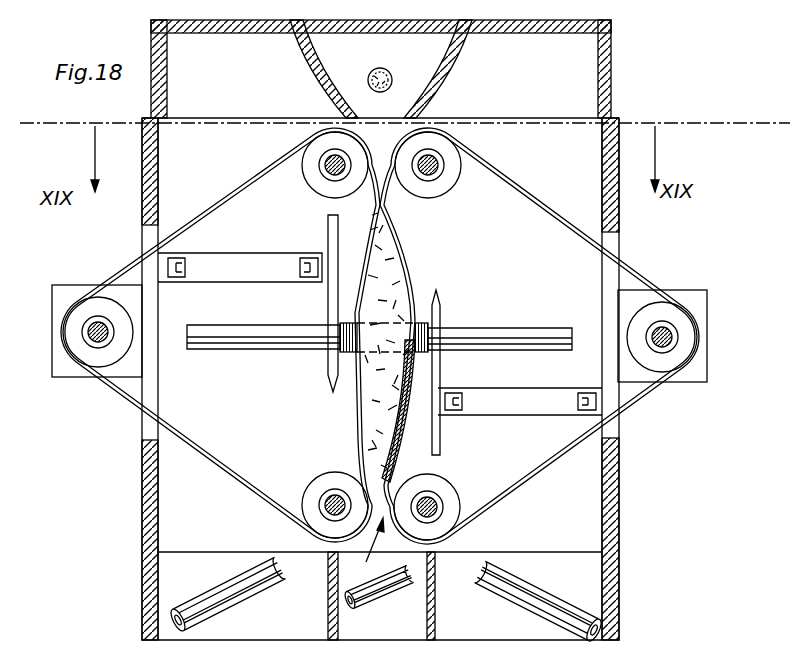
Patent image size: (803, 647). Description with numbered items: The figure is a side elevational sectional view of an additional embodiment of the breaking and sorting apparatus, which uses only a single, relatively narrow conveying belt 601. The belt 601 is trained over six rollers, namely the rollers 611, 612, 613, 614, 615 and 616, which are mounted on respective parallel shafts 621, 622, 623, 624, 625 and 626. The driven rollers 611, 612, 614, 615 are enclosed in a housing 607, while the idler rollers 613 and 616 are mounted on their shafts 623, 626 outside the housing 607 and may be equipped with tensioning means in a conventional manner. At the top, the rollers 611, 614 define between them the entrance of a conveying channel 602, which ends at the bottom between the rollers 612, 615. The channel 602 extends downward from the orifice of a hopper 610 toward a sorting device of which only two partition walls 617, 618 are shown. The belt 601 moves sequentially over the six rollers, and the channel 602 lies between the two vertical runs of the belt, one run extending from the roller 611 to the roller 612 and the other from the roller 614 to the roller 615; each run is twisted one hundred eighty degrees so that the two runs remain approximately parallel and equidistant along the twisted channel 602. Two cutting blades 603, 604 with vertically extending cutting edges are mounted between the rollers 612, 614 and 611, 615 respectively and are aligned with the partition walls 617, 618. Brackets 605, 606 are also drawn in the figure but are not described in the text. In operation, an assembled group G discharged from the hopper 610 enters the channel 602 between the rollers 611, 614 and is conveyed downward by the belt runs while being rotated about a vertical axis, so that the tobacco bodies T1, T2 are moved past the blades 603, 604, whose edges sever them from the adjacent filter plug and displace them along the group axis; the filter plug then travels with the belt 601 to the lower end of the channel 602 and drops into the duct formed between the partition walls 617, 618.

The conveying belt 601 is at (500, 178).
The conveying channel 602 is at (363, 550).
The cutting blade 603 is at (329, 357).
The cutting blade 604 is at (440, 318).
The bracket 605 is at (263, 252).
The bracket 606 is at (495, 416).
The housing 607 is at (602, 190).
The hopper 610 is at (607, 82).
The driven roller 611 is at (452, 163).
The driven roller 612 is at (314, 520).
The idler roller 613 is at (72, 345).
The driven roller 614 is at (303, 165).
The driven roller 615 is at (450, 505).
The idler roller 616 is at (678, 318).
The partition wall 617 is at (340, 632).
The partition wall 618 is at (436, 641).
The shaft 621 is at (428, 175).
The shaft 622 is at (337, 497).
The shaft 623 is at (96, 340).
The shaft 624 is at (337, 175).
The shaft 625 is at (431, 502).
The shaft 626 is at (662, 345).
The tobacco body T1 is at (246, 336).
The tobacco body T2 is at (537, 333).
The assembled group G is at (386, 76).